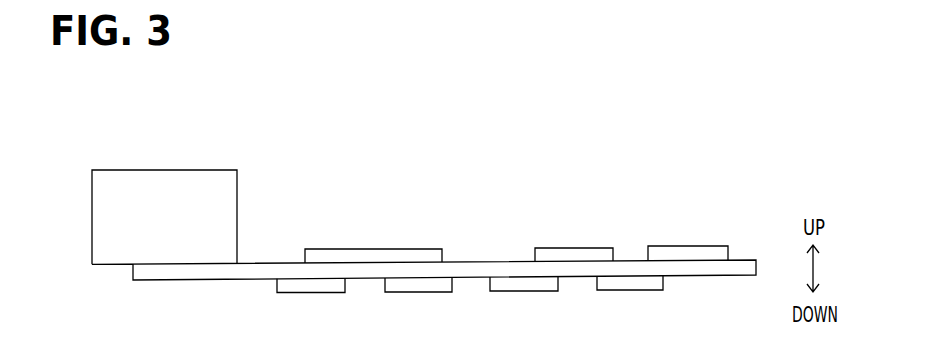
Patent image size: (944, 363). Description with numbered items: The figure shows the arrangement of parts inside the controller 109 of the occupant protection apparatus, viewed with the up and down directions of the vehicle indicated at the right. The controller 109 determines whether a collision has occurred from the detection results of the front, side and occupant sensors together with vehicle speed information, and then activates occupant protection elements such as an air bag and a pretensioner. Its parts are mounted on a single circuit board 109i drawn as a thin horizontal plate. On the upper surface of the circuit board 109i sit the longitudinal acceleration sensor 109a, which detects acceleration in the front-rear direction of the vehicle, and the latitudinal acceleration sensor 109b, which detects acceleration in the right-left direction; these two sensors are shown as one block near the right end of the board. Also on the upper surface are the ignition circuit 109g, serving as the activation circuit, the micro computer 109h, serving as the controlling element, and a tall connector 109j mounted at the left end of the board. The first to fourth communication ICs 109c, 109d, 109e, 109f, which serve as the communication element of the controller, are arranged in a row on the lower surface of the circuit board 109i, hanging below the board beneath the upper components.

The controller 109 is at (503, 129).
The longitudinal acceleration sensor 109a is at (699, 226).
The latitudinal acceleration sensor 109b is at (692, 250).
The first communication IC 109c is at (309, 291).
The second communication IC 109d is at (417, 290).
The third communication IC 109e is at (521, 290).
The fourth communication IC 109f is at (628, 289).
The ignition circuit 109g is at (577, 250).
The micro computer 109h is at (385, 250).
The circuit board 109i is at (501, 268).
The connector 109j is at (172, 171).